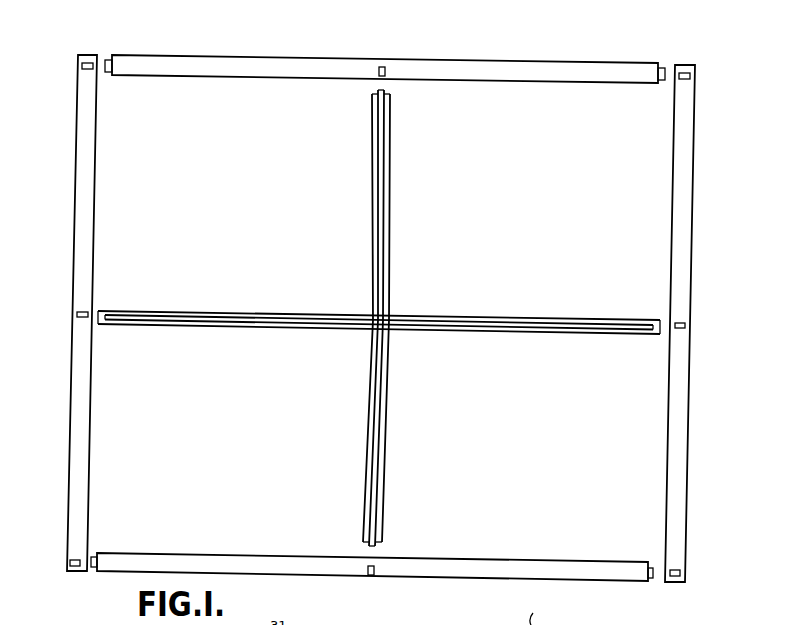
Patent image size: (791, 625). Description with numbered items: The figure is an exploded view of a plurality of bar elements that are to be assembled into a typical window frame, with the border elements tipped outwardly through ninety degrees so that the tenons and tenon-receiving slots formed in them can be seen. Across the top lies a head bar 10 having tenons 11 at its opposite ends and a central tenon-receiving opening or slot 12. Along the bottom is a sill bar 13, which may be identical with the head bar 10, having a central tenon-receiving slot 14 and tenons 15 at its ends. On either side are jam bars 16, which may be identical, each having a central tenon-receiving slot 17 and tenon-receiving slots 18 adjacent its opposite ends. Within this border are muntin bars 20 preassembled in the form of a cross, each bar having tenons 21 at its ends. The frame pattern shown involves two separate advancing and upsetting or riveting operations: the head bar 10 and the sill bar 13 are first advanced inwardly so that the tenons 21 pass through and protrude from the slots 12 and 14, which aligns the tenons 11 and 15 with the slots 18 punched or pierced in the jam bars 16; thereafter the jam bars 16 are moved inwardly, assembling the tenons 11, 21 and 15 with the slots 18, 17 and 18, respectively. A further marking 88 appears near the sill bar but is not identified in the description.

The head bar 10 is at (528, 63).
The tenon 11 is at (110, 75).
The tenon-receiving opening or slot 12 is at (384, 68).
The sill bar 13 is at (496, 578).
The central tenon-receiving slot 14 is at (373, 575).
The tenon 15 is at (94, 556).
The jam bar 16 is at (76, 240).
The central tenon-receiving slot 17 is at (90, 313).
The tenon-receiving slot 18 is at (82, 67).
The muntin bar 20 is at (385, 238).
The tenon 21 is at (381, 91).
The bottom member portion 88 is at (533, 609).